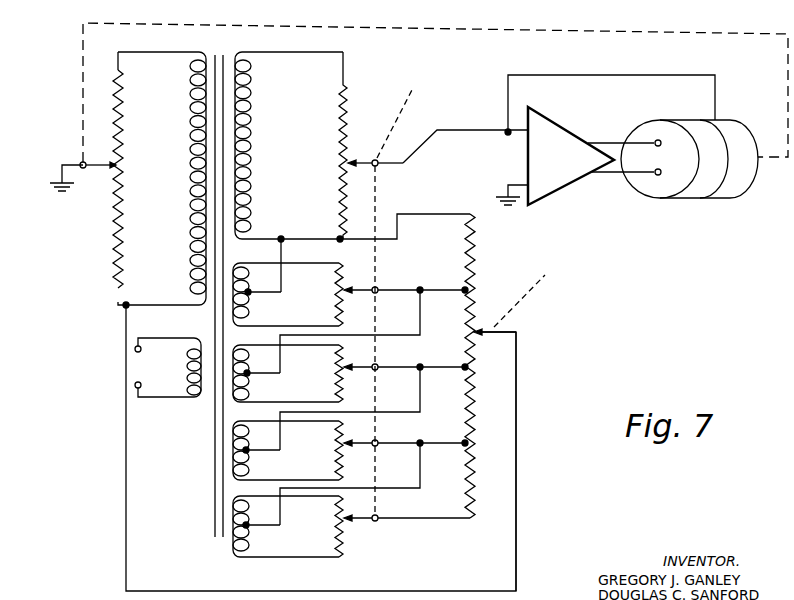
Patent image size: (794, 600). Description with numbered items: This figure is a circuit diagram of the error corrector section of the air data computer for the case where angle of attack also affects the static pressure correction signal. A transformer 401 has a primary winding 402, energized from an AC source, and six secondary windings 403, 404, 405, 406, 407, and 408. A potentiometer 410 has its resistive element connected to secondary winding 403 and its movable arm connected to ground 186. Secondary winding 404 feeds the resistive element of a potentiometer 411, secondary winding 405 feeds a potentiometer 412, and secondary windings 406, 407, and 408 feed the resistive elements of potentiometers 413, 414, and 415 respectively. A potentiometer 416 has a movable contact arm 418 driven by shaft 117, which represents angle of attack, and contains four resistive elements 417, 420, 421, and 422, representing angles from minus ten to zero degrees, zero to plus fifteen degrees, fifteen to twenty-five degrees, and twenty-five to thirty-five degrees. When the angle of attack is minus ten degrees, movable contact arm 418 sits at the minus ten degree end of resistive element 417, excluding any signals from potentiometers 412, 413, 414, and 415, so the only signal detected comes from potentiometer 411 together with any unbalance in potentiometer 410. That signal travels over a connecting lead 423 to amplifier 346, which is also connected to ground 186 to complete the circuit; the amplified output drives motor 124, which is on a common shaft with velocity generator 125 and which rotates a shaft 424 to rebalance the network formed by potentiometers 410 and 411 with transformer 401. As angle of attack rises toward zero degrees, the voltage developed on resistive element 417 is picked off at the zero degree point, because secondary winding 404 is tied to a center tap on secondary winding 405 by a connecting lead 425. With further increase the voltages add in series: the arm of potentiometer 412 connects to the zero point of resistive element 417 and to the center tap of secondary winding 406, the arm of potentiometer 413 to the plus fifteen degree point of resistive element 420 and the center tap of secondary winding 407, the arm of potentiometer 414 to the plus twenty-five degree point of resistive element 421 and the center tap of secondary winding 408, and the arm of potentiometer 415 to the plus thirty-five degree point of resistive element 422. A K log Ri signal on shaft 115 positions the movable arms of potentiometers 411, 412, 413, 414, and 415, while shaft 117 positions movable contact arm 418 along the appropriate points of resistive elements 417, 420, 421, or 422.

The shaft 115 is at (403, 110).
The shaft 117 is at (523, 299).
The motor 124 is at (683, 199).
The velocity generator 125 is at (722, 199).
The ground 186 is at (53, 186).
The amplifier 346 is at (565, 188).
The transformer 401 is at (230, 50).
The primary winding 402 is at (183, 398).
The secondary winding 403 is at (186, 180).
The secondary winding 404 is at (250, 128).
The secondary winding 405 is at (258, 259).
The secondary winding 406 is at (258, 344).
The secondary winding 407 is at (258, 420).
The secondary winding 408 is at (227, 556).
The potentiometer 410 is at (106, 216).
The potentiometer 411 is at (381, 142).
The potentiometer 412 is at (323, 288).
The potentiometer 413 is at (323, 368).
The potentiometer 414 is at (323, 443).
The potentiometer 415 is at (323, 518).
The potentiometer 416 is at (564, 369).
The resistive element 417 is at (465, 252).
The movable contact arm 418 is at (509, 331).
The resistive element 420 is at (464, 334).
The resistive element 421 is at (463, 402).
The resistive element 422 is at (463, 482).
The connecting lead 423 is at (428, 137).
The shaft 424 is at (545, 31).
The connecting lead 425 is at (283, 251).